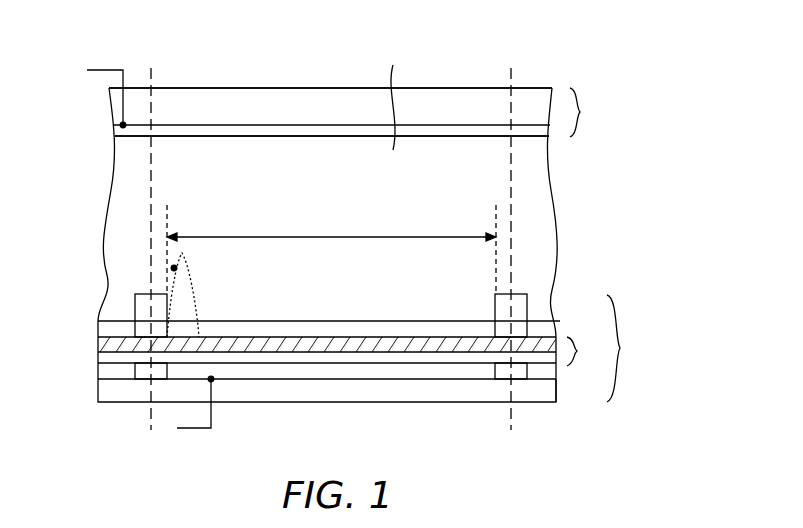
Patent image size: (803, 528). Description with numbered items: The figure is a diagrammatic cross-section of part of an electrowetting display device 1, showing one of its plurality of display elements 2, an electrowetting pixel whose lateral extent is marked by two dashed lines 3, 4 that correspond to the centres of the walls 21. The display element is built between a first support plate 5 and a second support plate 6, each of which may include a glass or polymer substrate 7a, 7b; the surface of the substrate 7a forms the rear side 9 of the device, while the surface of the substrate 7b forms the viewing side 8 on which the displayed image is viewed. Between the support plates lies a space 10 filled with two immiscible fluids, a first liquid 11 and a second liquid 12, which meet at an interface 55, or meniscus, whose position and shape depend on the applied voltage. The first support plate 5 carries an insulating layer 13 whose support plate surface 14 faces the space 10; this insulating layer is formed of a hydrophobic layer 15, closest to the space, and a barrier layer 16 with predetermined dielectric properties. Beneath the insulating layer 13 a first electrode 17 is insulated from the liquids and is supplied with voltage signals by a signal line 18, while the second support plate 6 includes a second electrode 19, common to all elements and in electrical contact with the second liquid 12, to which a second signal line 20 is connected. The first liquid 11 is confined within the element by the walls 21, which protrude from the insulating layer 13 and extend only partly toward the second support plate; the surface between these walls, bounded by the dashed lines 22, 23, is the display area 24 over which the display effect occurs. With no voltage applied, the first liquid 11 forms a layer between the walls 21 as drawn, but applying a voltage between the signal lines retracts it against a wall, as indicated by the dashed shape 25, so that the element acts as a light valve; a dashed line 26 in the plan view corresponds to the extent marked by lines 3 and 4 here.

The electrowetting display device 1 is at (619, 61).
The display element 2 is at (328, 50).
The dashed line 3 is at (151, 70).
The dashed line 4 is at (511, 70).
The first support plate 5 is at (623, 348).
The second support plate 6 is at (356, 112).
The substrate 7a is at (537, 395).
The substrate 7b is at (460, 103).
The viewing side 8 is at (237, 88).
The rear side 9 is at (293, 403).
The space 10 is at (396, 96).
The first liquid 11 is at (464, 325).
The second liquid 12 is at (553, 212).
The insulating layer 13 is at (584, 351).
The support plate surface 14 is at (374, 337).
The layer 15 is at (330, 337).
The barrier layer 16 is at (287, 357).
The first electrode 17 is at (393, 372).
The signal line 18 is at (195, 428).
The second electrode 19 is at (138, 132).
The second signal line 20 is at (104, 70).
The walls 21 is at (140, 305).
The dashed line 22 is at (496, 208).
The dashed line 23 is at (167, 208).
The display area 24 is at (331, 226).
The dashed shape 25 is at (174, 268).
The dashed line 26 is at (197, 290).
The interface 55 is at (419, 325).